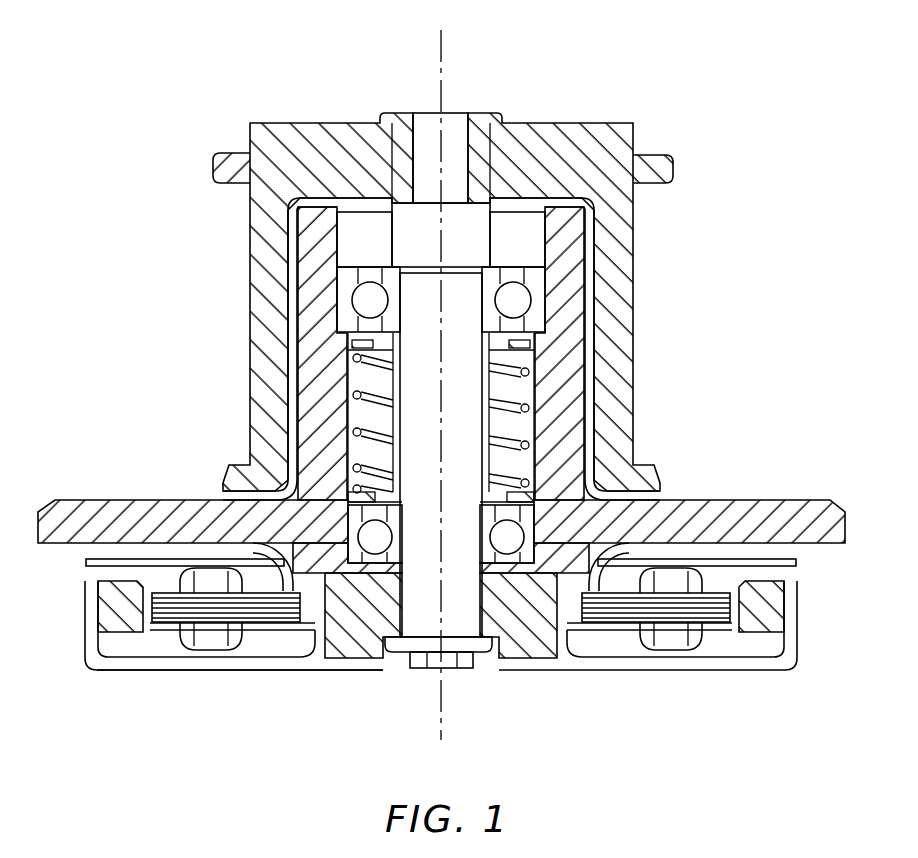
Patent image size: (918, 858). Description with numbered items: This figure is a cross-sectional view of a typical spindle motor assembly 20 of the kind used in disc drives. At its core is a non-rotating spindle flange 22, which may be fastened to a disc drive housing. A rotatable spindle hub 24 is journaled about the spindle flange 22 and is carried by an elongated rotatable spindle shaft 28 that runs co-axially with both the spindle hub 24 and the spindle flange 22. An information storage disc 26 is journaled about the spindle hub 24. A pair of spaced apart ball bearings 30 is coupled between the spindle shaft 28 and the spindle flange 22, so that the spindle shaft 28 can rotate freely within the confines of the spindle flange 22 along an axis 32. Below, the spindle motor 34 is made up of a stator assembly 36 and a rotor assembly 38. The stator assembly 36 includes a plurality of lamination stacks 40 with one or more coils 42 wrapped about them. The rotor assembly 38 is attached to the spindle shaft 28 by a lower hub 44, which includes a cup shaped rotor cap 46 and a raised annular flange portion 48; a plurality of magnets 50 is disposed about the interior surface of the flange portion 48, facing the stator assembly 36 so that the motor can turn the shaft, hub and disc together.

The spindle motor assembly 20 is at (205, 110).
The spindle flange 22 is at (572, 440).
The spindle hub 24 is at (617, 258).
The information storage disc 26 is at (657, 167).
The spindle shaft 28 is at (457, 298).
The ball bearings 30 is at (367, 300).
The axis 32 is at (446, 43).
The spindle motor 34 is at (806, 588).
The stator assembly 36 is at (206, 612).
The rotor assembly 38 is at (798, 640).
The lamination stacks 40 is at (608, 615).
The coils 42 is at (672, 640).
The lower hub 44 is at (360, 643).
The rotor cap 46 is at (230, 669).
The flange portion 48 is at (84, 632).
The magnets 50 is at (117, 606).